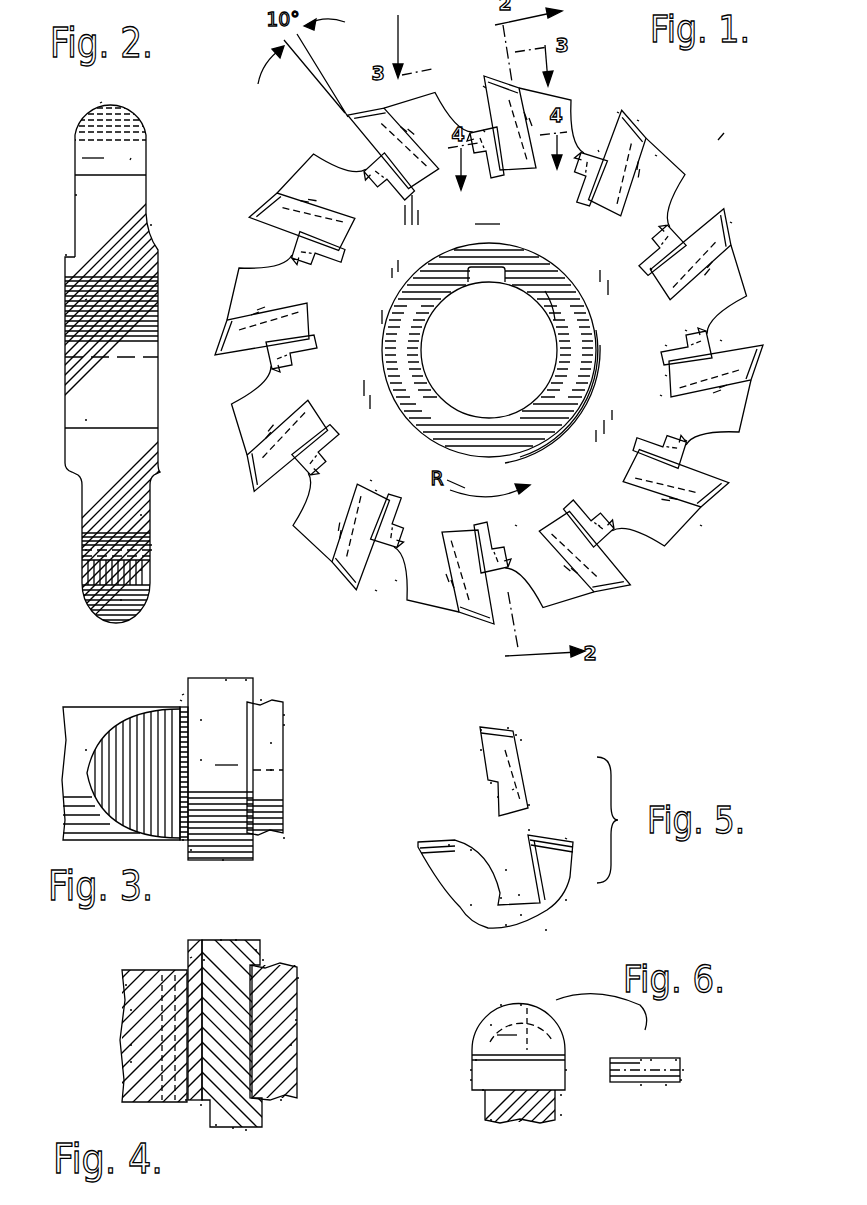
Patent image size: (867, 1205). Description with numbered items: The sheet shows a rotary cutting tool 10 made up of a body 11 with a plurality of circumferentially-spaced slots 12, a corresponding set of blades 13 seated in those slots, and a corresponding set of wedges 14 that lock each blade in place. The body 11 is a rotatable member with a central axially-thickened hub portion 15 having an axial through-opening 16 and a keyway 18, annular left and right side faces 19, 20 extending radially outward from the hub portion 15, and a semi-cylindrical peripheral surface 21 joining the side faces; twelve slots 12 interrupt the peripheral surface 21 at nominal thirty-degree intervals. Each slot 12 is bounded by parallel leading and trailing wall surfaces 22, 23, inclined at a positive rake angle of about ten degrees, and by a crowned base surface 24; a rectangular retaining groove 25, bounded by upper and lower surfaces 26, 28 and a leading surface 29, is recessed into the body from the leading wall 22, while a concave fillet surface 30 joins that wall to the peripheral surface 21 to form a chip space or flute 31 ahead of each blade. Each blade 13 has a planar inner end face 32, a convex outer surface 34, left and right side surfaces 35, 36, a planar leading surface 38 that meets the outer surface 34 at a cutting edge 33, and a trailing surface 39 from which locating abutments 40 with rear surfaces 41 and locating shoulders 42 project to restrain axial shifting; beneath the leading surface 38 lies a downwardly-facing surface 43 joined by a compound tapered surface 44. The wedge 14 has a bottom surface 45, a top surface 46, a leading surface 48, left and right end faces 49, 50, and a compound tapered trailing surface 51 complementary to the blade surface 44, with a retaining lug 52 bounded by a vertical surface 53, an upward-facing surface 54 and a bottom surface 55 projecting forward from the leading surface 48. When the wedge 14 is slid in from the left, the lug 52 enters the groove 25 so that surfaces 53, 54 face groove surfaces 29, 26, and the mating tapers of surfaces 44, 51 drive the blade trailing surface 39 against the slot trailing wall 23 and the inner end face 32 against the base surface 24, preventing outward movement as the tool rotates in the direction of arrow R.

In FIG. 1, the cutting tool 10 is at (718, 140).
In FIG. 2, the cutting tool 10 is at (150, 110).
In FIG. 1, the body 11 is at (742, 259).
In FIG. 2, the body 11 is at (150, 201).
In FIG. 3, the body 11 is at (72, 704).
In FIG. 4, the body 11 is at (122, 962).
In FIG. 5, the body 11 is at (419, 844).
In FIG. 6, the body 11 is at (488, 1114).
In FIG. 1, the slot 12 is at (370, 480).
In FIG. 2, the slot 12 is at (130, 161).
In FIG. 3, the slot 12 is at (200, 720).
In FIG. 4, the slot 12 is at (220, 940).
In FIG. 5, the slot 12 is at (545, 930).
In FIG. 6, the slot 12 is at (470, 1070).
In FIG. 1, the blade 13 is at (266, 190).
In FIG. 4, the blade 13 is at (232, 1126).
In FIG. 5, the blade 13 is at (492, 722).
In FIG. 6, the blade 13 is at (480, 1010).
In FIG. 1, the wedge 14 is at (674, 226).
In FIG. 3, the wedge 14 is at (183, 700).
In FIG. 4, the wedge 14 is at (192, 960).
In FIG. 6, the wedge 14 is at (680, 1066).
In FIG. 1, the hub portion 15 is at (433, 405).
In FIG. 2, the hub portion 15 is at (65, 255).
In FIG. 1, the axial through-opening 16 is at (530, 300).
In FIG. 2, the axial through-opening 16 is at (85, 420).
In FIG. 1, the keyway 18 is at (480, 278).
In FIG. 2, the keyway 18 is at (85, 300).
In FIG. 1, the left side face 19 is at (487, 215).
In FIG. 2, the left side face 19 is at (150, 225).
In FIG. 3, the left side face 19 is at (283, 838).
In FIG. 4, the left side face 19 is at (280, 1100).
In FIG. 5, the left side face 19 is at (521, 914).
In FIG. 6, the left side face 19 is at (560, 1115).
In FIG. 2, the right side face 20 is at (75, 195).
In FIG. 3, the right side face 20 is at (283, 700).
In FIG. 4, the right side face 20 is at (290, 968).
In FIG. 6, the right side face 20 is at (490, 1120).
In FIG. 2, the peripheral surface 21 is at (100, 103).
In FIG. 3, the peripheral surface 21 is at (270, 743).
In FIG. 5, the peripheral surface 21 is at (565, 838).
In FIG. 6, the peripheral surface 21 is at (490, 1025).
In FIG. 1, the leading wall surface 22 is at (598, 150).
In FIG. 2, the leading wall surface 22 is at (140, 570).
In FIG. 3, the leading wall surface 22 is at (75, 730).
In FIG. 4, the leading wall surface 22 is at (125, 985).
In FIG. 5, the leading wall surface 22 is at (505, 870).
In FIG. 1, the trailing wall surface 23 is at (637, 120).
In FIG. 2, the trailing wall surface 23 is at (93, 148).
In FIG. 3, the trailing wall surface 23 is at (283, 725).
In FIG. 4, the trailing wall surface 23 is at (295, 1020).
In FIG. 5, the trailing wall surface 23 is at (528, 830).
In FIG. 5, the base surface 24 is at (565, 900).
In FIG. 6, the base surface 24 is at (520, 1120).
In FIG. 1, the retaining groove 25 is at (660, 395).
In FIG. 2, the retaining groove 25 is at (85, 550).
In FIG. 4, the retaining groove 25 is at (130, 1010).
In FIG. 5, the retaining groove 25 is at (518, 895).
In FIG. 2, the upper surface of retaining groove 26 is at (150, 550).
In FIG. 5, the upper surface of retaining groove 26 is at (500, 898).
In FIG. 2, the lower surface of retaining groove 28 is at (150, 545).
In FIG. 5, the lower surface of retaining groove 28 is at (505, 925).
In FIG. 2, the leading surface of retaining groove 29 is at (140, 515).
In FIG. 5, the leading surface of retaining groove 29 is at (470, 905).
In FIG. 1, the fillet surface 30 is at (395, 580).
In FIG. 2, the fillet surface 30 is at (120, 600).
In FIG. 3, the fillet surface 30 is at (85, 750).
In FIG. 5, the fillet surface 30 is at (448, 845).
In FIG. 1, the chip space or flute 31 is at (375, 590).
In FIG. 5, the chip space or flute 31 is at (470, 850).
In FIG. 1, the inner end face 32 is at (515, 525).
In FIG. 5, the inner end face 32 is at (528, 805).
In FIG. 6, the inner end face 32 is at (482, 1090).
In FIG. 1, the cutting edge 33 is at (617, 112).
In FIG. 3, the cutting edge 33 is at (200, 760).
In FIG. 5, the cutting edge 33 is at (480, 730).
In FIG. 6, the cutting edge 33 is at (500, 1005).
In FIG. 1, the outer surface 34 is at (730, 222).
In FIG. 3, the outer surface 34 is at (220, 769).
In FIG. 4, the outer surface 34 is at (235, 1045).
In FIG. 5, the outer surface 34 is at (507, 728).
In FIG. 6, the outer surface 34 is at (520, 1005).
In FIG. 1, the left side surface 35 is at (375, 490).
In FIG. 3, the left side surface 35 is at (222, 860).
In FIG. 4, the left side surface 35 is at (245, 1130).
In FIG. 5, the left side surface 35 is at (512, 790).
In FIG. 6, the left side surface 35 is at (565, 1070).
In FIG. 3, the right side surface 36 is at (225, 680).
In FIG. 4, the right side surface 36 is at (235, 940).
In FIG. 6, the right side surface 36 is at (470, 1080).
In FIG. 1, the leading surface 38 is at (483, 86).
In FIG. 3, the leading surface 38 is at (190, 850).
In FIG. 5, the leading surface 38 is at (480, 750).
In FIG. 1, the trailing surface 39 is at (700, 525).
In FIG. 3, the trailing surface 39 is at (270, 770).
In FIG. 4, the trailing surface 39 is at (290, 1045).
In FIG. 5, the trailing surface 39 is at (515, 735).
In FIG. 1, the locating abutment 40 is at (655, 155).
In FIG. 3, the locating abutment 40 is at (243, 682).
In FIG. 4, the locating abutment 40 is at (255, 950).
In FIG. 5, the locating abutment 40 is at (520, 740).
In FIG. 3, the rear surface of locating abutment 41 is at (260, 700).
In FIG. 4, the rear surface of locating abutment 41 is at (262, 960).
In FIG. 3, the locating shoulder 42 is at (283, 715).
In FIG. 4, the locating shoulder 42 is at (297, 978).
In FIG. 1, the downwardly-facing surface 43 is at (598, 525).
In FIG. 5, the downwardly-facing surface 43 is at (490, 783).
In FIG. 6, the downwardly-facing surface 43 is at (475, 1060).
In FIG. 1, the compound tapered surface 44 is at (685, 330).
In FIG. 4, the compound tapered surface 44 is at (215, 1125).
In FIG. 5, the compound tapered surface 44 is at (497, 797).
In FIG. 6, the compound tapered surface 44 is at (560, 1095).
In FIG. 1, the wedge bottom surface 45 is at (650, 268).
In FIG. 6, the wedge bottom surface 45 is at (665, 1085).
In FIG. 1, the wedge top surface 46 is at (720, 340).
In FIG. 3, the wedge top surface 46 is at (180, 700).
In FIG. 6, the wedge top surface 46 is at (675, 1060).
In FIG. 1, the wedge leading surface 48 is at (483, 130).
In FIG. 4, the wedge leading surface 48 is at (185, 1100).
In FIG. 6, the wedge leading surface 48 is at (650, 1060).
In FIG. 1, the wedge left end face 49 is at (685, 440).
In FIG. 3, the wedge left end face 49 is at (182, 840).
In FIG. 4, the wedge left end face 49 is at (200, 1105).
In FIG. 6, the wedge left end face 49 is at (682, 1070).
In FIG. 3, the wedge right end face 50 is at (185, 700).
In FIG. 4, the wedge right end face 50 is at (190, 945).
In FIG. 1, the wedge tapered trailing surface 51 is at (665, 375).
In FIG. 4, the wedge tapered trailing surface 51 is at (203, 960).
In FIG. 1, the retaining lug 52 is at (665, 345).
In FIG. 4, the retaining lug 52 is at (130, 1045).
In FIG. 6, the retaining lug 52 is at (680, 1080).
In FIG. 6, the lug vertical surface 53 is at (640, 1085).
In FIG. 6, the lug upwardly-facing surface 54 is at (640, 1060).
In FIG. 4, the lug bottom surface 55 is at (130, 1062).